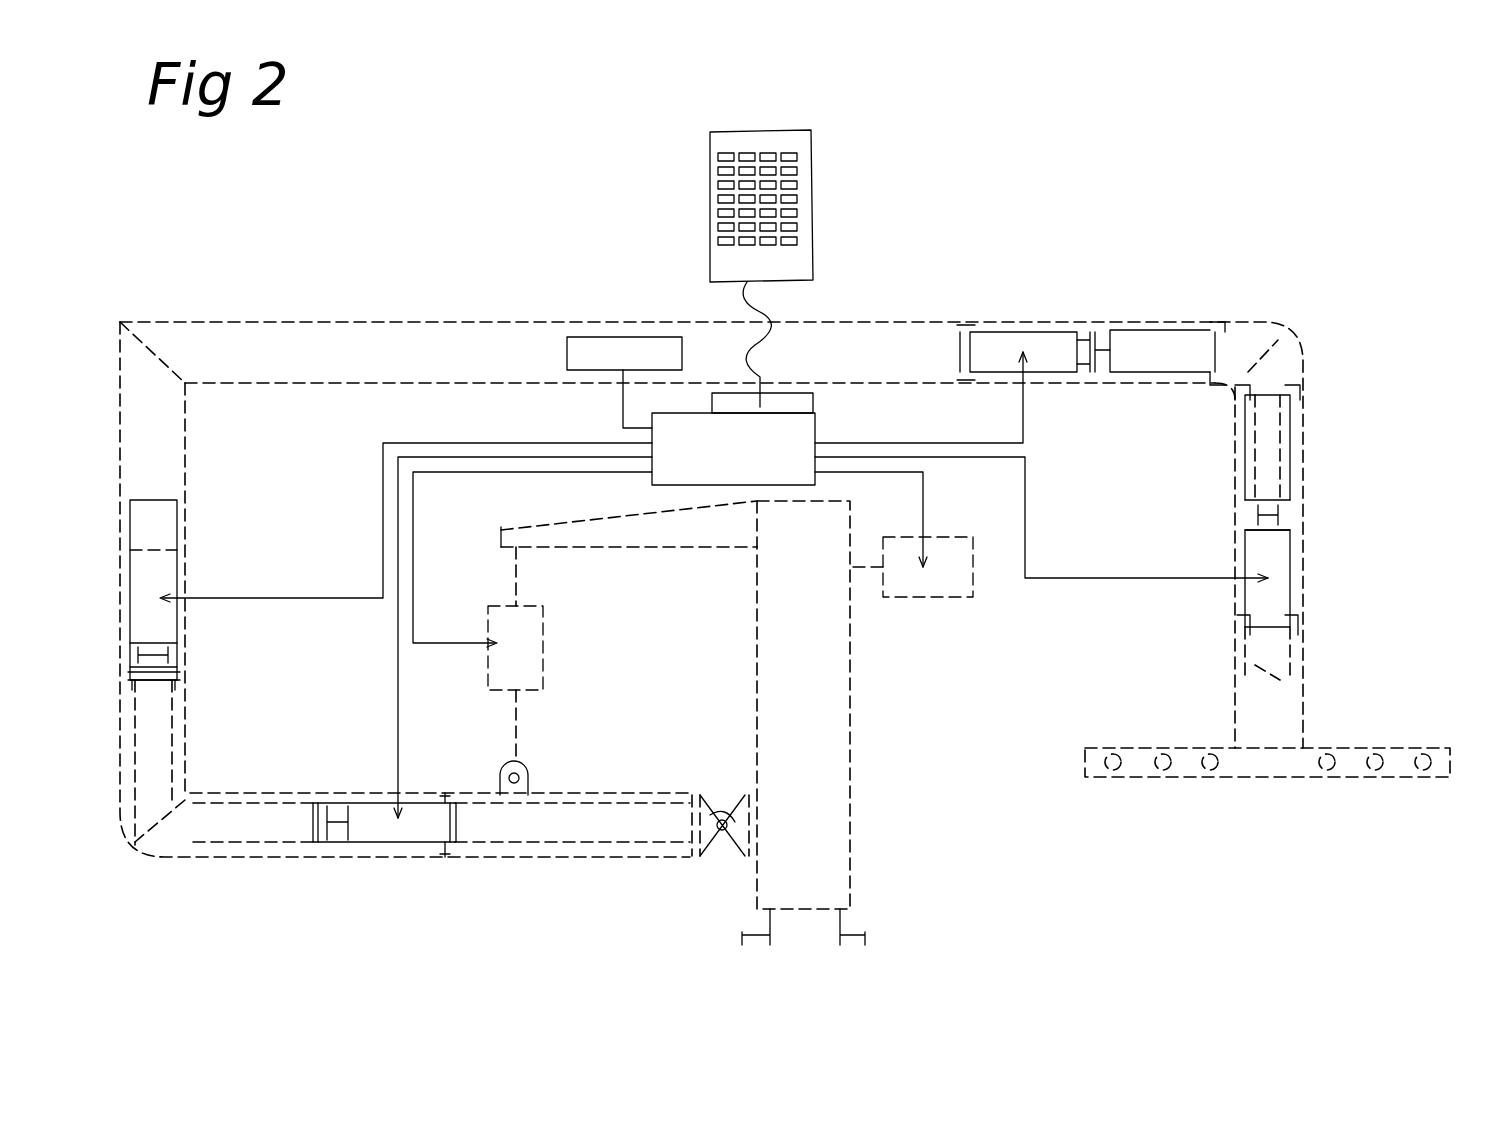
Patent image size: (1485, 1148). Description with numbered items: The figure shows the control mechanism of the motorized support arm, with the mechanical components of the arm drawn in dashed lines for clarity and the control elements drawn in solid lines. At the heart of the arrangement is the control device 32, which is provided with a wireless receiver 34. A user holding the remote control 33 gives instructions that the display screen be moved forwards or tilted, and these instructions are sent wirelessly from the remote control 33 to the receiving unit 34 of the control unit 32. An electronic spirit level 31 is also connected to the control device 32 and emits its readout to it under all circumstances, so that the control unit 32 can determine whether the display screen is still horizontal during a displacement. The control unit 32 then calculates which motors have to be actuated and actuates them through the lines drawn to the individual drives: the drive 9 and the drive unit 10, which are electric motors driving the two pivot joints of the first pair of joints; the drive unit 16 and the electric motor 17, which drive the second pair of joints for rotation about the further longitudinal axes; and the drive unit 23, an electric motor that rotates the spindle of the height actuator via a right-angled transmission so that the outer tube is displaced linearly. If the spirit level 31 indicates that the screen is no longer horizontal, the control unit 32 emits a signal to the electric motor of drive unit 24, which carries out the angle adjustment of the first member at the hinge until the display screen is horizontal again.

The drive 9 is at (378, 820).
The drive unit 10 is at (152, 620).
The drive unit 16 is at (1002, 343).
The electric motor 17 is at (1275, 553).
The drive unit 23 is at (945, 590).
The drive unit 24 is at (540, 630).
The electronic spirit level 31 is at (620, 350).
The control device 32 is at (690, 450).
The remote control 33 is at (800, 150).
The wireless receiver 34 is at (813, 402).